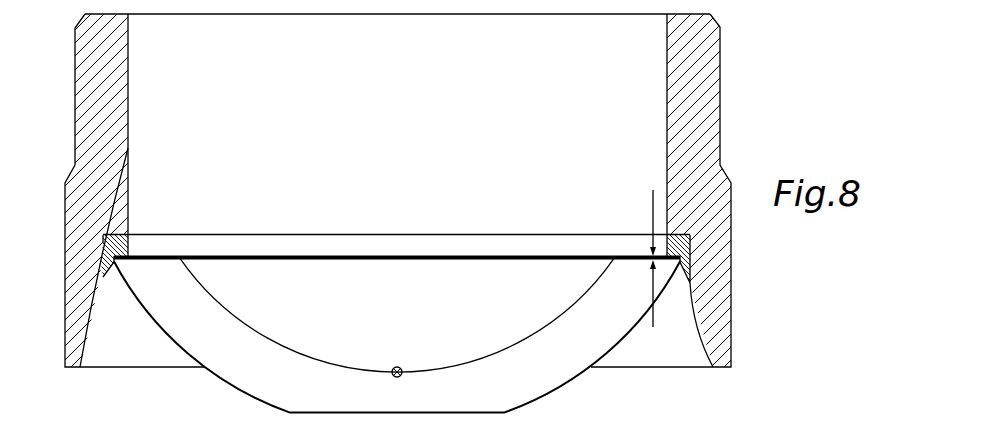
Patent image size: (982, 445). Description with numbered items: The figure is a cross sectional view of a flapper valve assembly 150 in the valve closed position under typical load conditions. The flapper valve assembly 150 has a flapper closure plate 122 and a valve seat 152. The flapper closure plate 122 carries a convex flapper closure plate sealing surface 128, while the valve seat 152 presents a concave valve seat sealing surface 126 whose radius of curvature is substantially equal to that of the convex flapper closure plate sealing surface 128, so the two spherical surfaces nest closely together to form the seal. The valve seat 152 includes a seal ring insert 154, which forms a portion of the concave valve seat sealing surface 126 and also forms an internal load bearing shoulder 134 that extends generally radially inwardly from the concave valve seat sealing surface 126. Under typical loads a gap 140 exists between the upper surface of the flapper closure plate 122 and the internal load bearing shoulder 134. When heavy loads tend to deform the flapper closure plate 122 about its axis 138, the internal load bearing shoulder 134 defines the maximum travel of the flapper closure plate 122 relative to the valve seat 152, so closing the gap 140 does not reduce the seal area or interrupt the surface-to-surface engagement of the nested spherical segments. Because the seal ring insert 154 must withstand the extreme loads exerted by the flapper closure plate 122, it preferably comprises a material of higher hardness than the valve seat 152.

The flapper valve assembly 150 is at (745, 60).
The valve seat 152 is at (715, 112).
The seal ring insert 154 is at (128, 158).
The internal load bearing shoulder 134 is at (141, 254).
The axis 138 is at (398, 366).
The gap 140 is at (660, 271).
The flapper closure plate 122 is at (545, 378).
The concave valve seat sealing surface 126 is at (699, 352).
The convex flapper closure plate sealing surface 128 is at (672, 262).